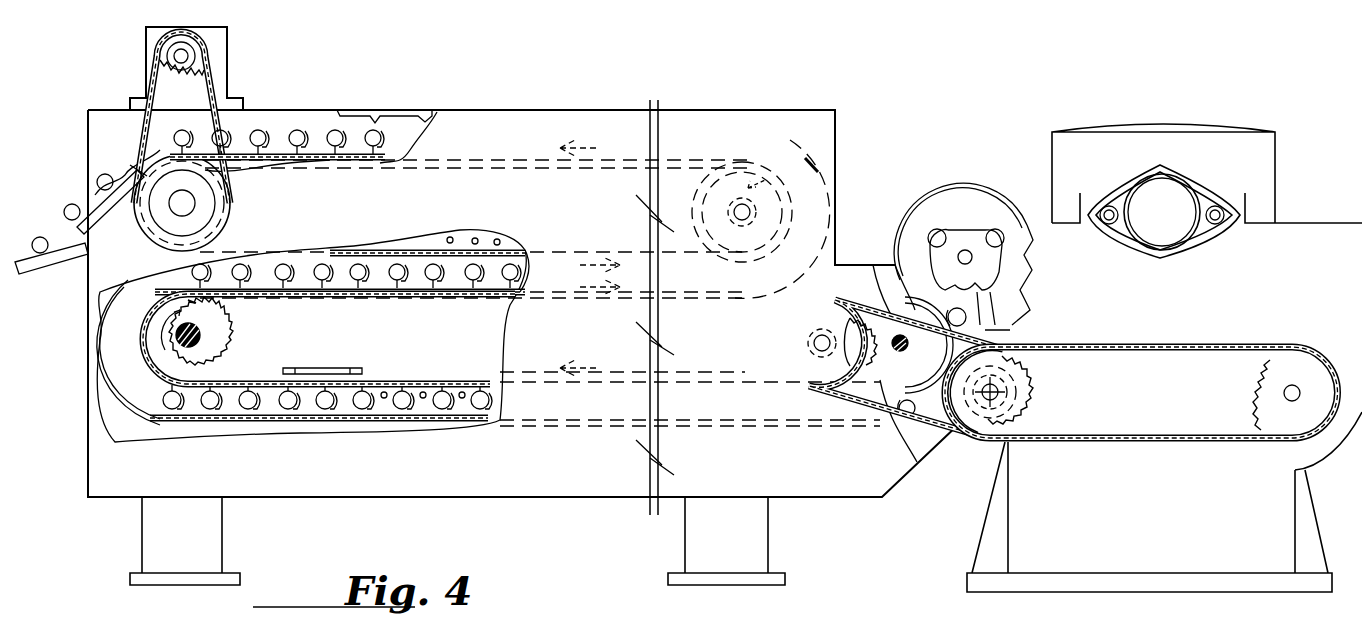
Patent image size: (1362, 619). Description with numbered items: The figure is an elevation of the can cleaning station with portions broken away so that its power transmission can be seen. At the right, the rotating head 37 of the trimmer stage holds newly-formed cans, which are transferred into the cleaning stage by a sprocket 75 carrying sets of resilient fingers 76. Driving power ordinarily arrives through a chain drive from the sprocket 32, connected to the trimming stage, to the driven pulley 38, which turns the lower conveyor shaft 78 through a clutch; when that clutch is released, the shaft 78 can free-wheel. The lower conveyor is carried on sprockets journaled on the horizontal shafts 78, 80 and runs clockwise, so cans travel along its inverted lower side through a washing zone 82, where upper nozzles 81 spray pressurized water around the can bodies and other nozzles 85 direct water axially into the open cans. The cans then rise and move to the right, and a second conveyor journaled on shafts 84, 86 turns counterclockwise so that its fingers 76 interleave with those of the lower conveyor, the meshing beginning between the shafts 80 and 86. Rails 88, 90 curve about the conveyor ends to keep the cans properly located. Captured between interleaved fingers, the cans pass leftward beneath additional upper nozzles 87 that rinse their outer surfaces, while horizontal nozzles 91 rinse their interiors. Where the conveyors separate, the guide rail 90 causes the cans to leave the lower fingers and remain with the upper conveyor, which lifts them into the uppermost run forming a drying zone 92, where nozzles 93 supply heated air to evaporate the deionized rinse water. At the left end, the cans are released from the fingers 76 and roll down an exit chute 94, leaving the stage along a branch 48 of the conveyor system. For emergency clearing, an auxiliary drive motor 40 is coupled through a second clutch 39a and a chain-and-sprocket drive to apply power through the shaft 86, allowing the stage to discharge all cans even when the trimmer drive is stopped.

The auxiliary drive motor 40 is at (220, 48).
The resilient fingers 76 is at (303, 140).
The nozzles 93 is at (396, 110).
The drying zone 92 is at (612, 140).
The shaft 84 is at (742, 205).
The guide rail 90 is at (820, 178).
The rotating head 37 is at (960, 240).
The exit chute 94 is at (90, 197).
The shaft 86 is at (190, 203).
The second clutch 39a is at (214, 220).
The upper nozzles 87 is at (450, 237).
The sprocket 75 is at (900, 313).
The shaft 78 is at (814, 343).
The driven pulley 38 is at (812, 382).
The shaft 80 is at (200, 338).
The upper nozzles 81 is at (325, 368).
The nozzles 85 is at (384, 392).
The horizontal nozzles 91 is at (512, 292).
The washing zone 82 is at (609, 342).
The sprocket 32 is at (1015, 392).
The rail 88 is at (125, 395).
The branch of conveyor system 48 is at (58, 260).